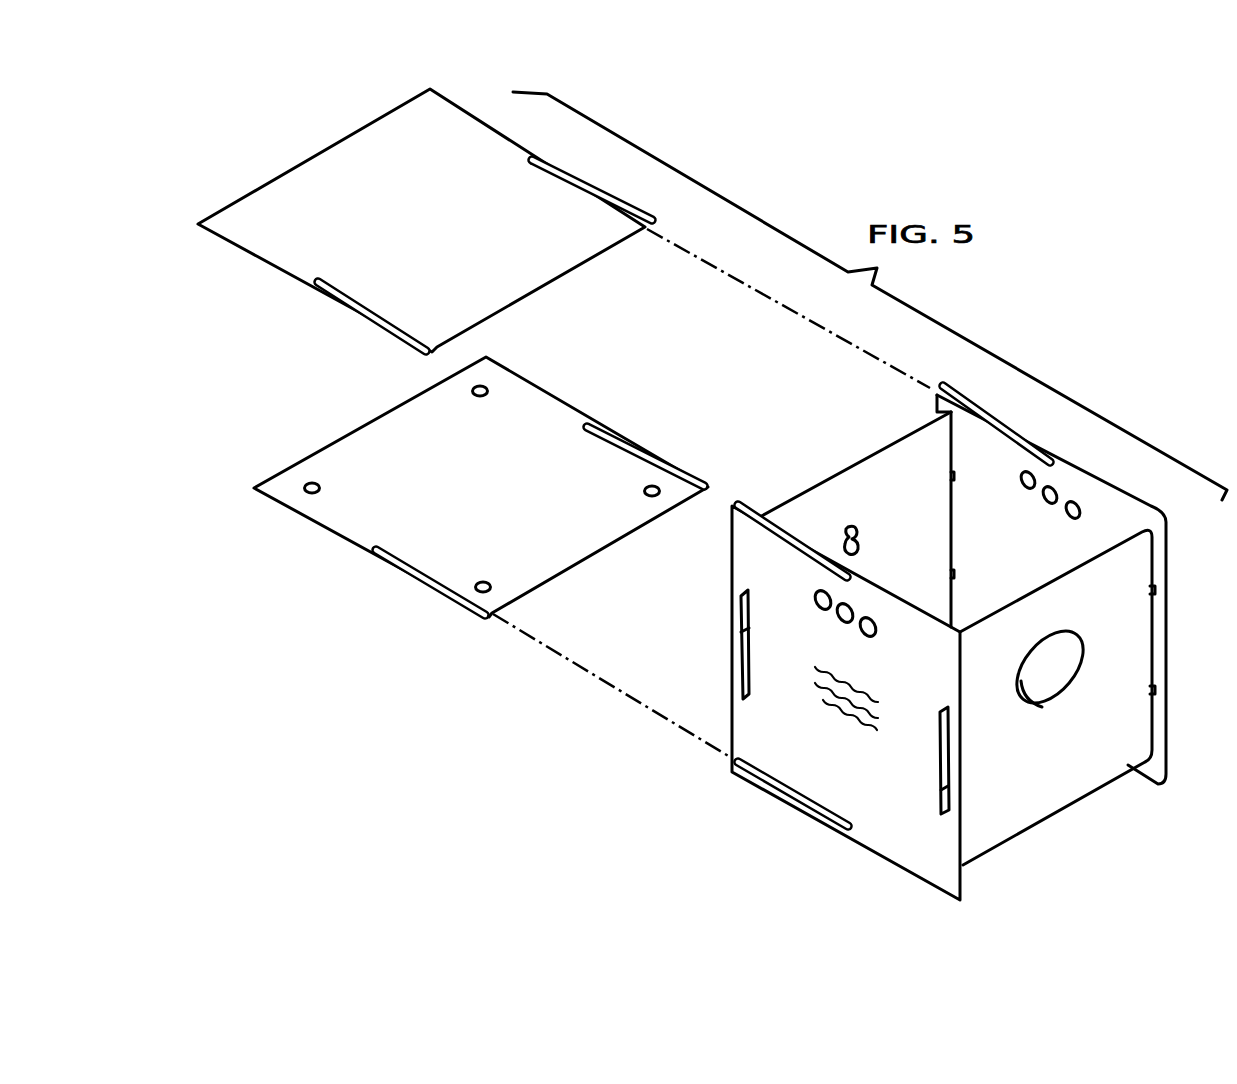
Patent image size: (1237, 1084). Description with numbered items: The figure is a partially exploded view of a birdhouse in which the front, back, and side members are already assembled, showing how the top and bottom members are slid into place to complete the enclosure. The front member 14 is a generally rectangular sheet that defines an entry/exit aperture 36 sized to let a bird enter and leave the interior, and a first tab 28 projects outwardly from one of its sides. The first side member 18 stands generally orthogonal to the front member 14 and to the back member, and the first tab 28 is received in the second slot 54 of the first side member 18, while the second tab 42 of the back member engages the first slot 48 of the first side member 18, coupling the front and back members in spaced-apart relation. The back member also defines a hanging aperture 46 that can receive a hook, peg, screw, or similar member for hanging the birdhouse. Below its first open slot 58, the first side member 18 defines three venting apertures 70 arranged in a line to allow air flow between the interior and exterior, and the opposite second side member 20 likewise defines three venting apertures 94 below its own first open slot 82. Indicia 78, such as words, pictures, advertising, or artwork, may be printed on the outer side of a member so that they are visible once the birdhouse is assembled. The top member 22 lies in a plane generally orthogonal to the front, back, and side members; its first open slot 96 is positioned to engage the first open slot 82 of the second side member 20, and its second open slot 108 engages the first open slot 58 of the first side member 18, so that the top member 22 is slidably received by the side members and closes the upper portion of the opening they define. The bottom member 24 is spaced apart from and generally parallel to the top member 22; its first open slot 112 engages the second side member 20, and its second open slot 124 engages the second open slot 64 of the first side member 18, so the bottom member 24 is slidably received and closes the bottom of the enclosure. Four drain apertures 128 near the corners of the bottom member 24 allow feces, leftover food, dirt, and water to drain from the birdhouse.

The front member 14 is at (1055, 812).
The first side member 18 is at (843, 834).
The second side member 20 is at (1136, 510).
The top member 22 is at (313, 157).
The bottom member 24 is at (367, 423).
The first tab 28 is at (942, 790).
The entry/exit aperture 36 is at (1058, 677).
The second tab 42 is at (743, 667).
The hanging aperture 46 is at (858, 547).
The first slot 48 is at (746, 592).
The second slot 54 is at (947, 707).
The first open slot 58 is at (731, 507).
The second open slot 64 is at (730, 758).
The venting apertures 70 is at (861, 632).
The indicia 78 is at (838, 724).
The first open slot 82 is at (933, 390).
The venting apertures 94 is at (1066, 514).
The first open slot 96 is at (648, 228).
The second open slot 108 is at (432, 352).
The first open slot 112 is at (700, 493).
The second open slot 124 is at (490, 618).
The drain apertures 128 is at (486, 388).